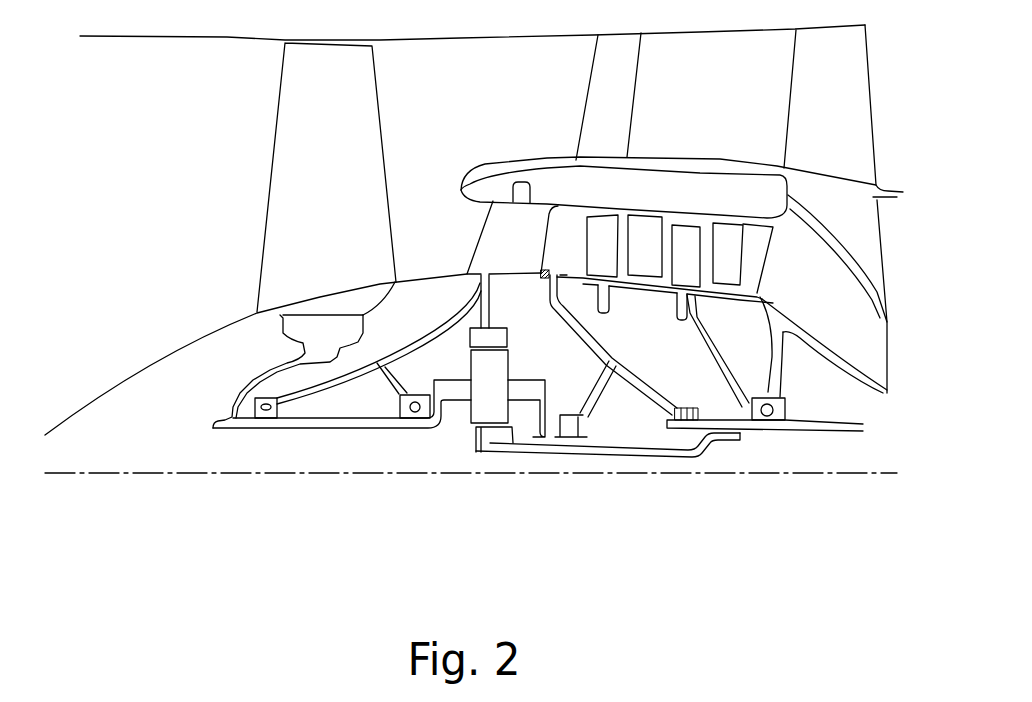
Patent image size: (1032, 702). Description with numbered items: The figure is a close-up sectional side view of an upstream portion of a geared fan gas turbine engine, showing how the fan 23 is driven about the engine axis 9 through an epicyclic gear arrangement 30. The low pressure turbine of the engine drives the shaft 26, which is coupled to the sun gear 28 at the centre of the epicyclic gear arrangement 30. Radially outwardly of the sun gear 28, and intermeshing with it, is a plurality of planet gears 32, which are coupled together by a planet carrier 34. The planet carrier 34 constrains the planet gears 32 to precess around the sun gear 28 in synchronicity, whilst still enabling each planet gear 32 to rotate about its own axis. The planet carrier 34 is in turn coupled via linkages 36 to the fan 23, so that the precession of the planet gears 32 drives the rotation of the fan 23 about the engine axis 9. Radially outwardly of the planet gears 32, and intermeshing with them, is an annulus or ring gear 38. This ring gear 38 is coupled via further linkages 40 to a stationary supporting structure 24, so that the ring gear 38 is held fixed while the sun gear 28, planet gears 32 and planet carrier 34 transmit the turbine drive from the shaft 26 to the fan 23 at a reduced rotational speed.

The engine axis 9 is at (249, 474).
The fan 23 is at (290, 180).
The stationary supporting structure 24 is at (500, 235).
The shaft 26 is at (650, 455).
The sun gear 28 is at (492, 440).
The epicyclic gear arrangement 30 is at (424, 436).
The planet gears 32 is at (477, 408).
The planet carrier 34 is at (548, 425).
The linkages 36 is at (442, 410).
The ring gear 38 is at (480, 337).
The linkages 40 is at (500, 307).